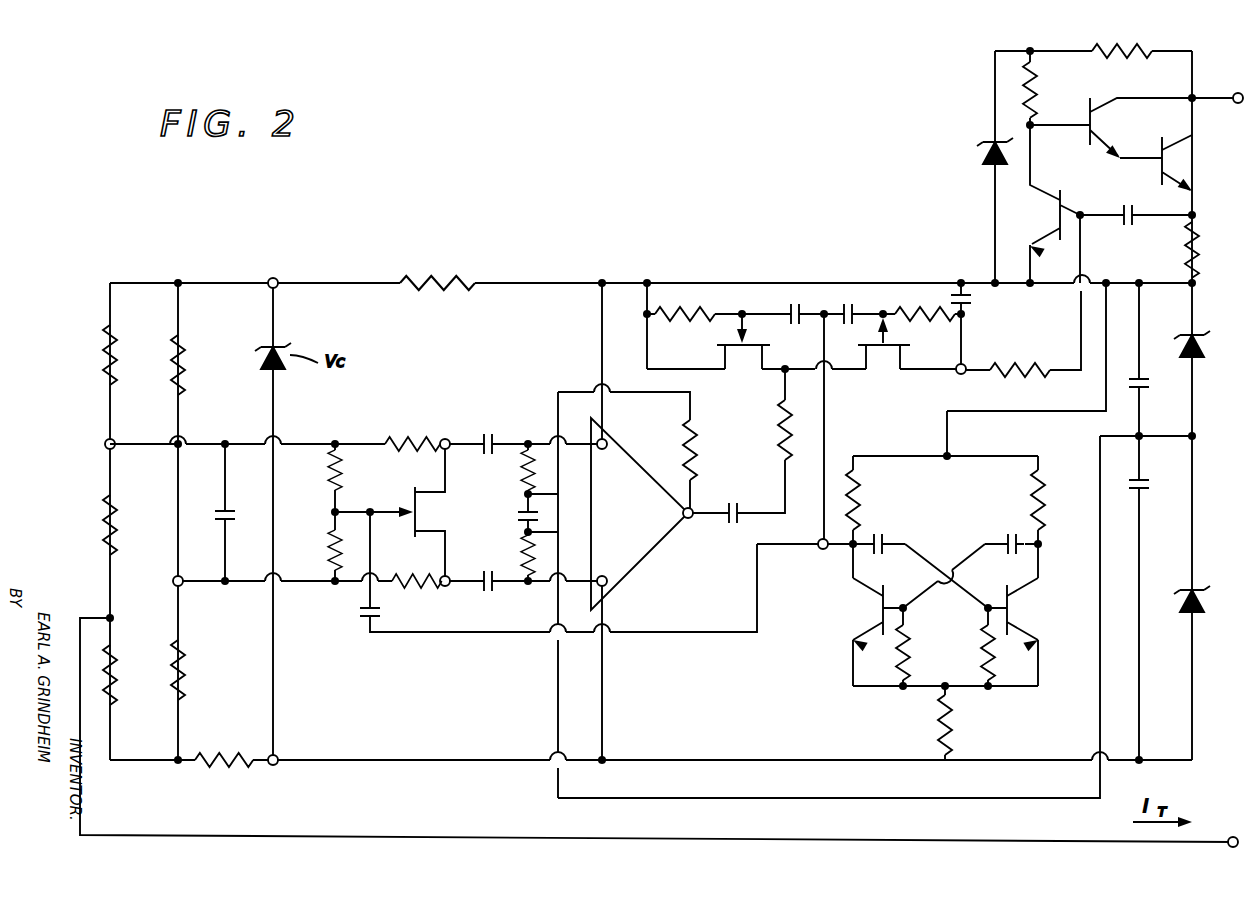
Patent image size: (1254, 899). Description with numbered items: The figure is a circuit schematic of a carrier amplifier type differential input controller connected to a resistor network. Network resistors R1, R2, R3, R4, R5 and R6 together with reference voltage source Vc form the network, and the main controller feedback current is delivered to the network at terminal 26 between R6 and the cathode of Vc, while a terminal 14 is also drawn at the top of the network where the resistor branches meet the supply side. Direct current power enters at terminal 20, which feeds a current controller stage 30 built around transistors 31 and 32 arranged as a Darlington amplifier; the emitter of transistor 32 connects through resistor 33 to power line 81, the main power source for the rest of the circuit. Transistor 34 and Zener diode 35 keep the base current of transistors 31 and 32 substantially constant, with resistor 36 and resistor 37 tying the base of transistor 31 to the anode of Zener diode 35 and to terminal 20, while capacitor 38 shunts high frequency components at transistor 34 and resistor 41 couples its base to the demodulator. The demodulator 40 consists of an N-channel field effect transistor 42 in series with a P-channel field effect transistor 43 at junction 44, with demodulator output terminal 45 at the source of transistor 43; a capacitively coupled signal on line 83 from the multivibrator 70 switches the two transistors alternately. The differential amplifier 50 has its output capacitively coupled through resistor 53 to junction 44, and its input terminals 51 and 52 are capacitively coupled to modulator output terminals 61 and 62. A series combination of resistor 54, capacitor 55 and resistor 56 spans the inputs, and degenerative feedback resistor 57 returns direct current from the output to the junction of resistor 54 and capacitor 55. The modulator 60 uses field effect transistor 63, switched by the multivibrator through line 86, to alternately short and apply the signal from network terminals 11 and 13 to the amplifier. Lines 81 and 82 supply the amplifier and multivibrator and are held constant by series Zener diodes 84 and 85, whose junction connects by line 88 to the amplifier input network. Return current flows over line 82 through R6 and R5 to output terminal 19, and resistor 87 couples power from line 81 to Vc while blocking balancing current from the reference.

The network terminal 11 is at (103, 444).
The network terminal 13 is at (182, 585).
The supply terminal 14 is at (273, 283).
The output terminal 19 is at (1229, 832).
The input power terminal 20 is at (1236, 104).
The terminal 26 is at (278, 758).
The current controller stage 30 is at (1070, 147).
The transistor 31 is at (1080, 122).
The transistor 32 is at (1144, 152).
The resistor 33 is at (1192, 276).
The transistor 34 is at (1062, 208).
The Zener diode 35 is at (980, 156).
The resistor 36 is at (1026, 73).
The resistor 37 is at (1100, 48).
The capacitor 38 is at (1141, 215).
The demodulator 40 is at (862, 410).
The resistor 41 is at (1012, 365).
The N-channel field effect transistor 42 is at (723, 341).
The P-channel field effect transistor 43 is at (896, 325).
The junction 44 is at (782, 374).
The demodulator output terminal 45 is at (957, 374).
The differential amplifier 50 is at (650, 578).
The amplifier signal input terminal 51 is at (608, 447).
The amplifier signal input terminal 52 is at (606, 578).
The resistor 53 is at (786, 454).
The resistor 54 is at (525, 473).
The capacitor 55 is at (522, 520).
The resistor 56 is at (525, 556).
The degenerative feedback resistor 57 is at (689, 442).
The modulator 60 is at (421, 493).
The modulator output terminal 61 is at (452, 440).
The modulator output terminal 62 is at (446, 584).
The field effect transistor 63 is at (410, 494).
The multivibrator 70 is at (1030, 460).
The power line 81 is at (776, 282).
The power return line 82 is at (746, 758).
The line 83 is at (823, 545).
The Zener diode 84 is at (1205, 352).
The Zener diode 85 is at (1208, 594).
The line 86 is at (507, 636).
The resistor 87 is at (460, 280).
The line 88 is at (824, 806).
The network resistor R1 is at (106, 354).
The network resistor R2 is at (174, 382).
The network resistor R3 is at (180, 668).
The network resistor R4 is at (110, 540).
The current feedback resistor R5 is at (155, 680).
The linearizing resistor R6 is at (242, 764).